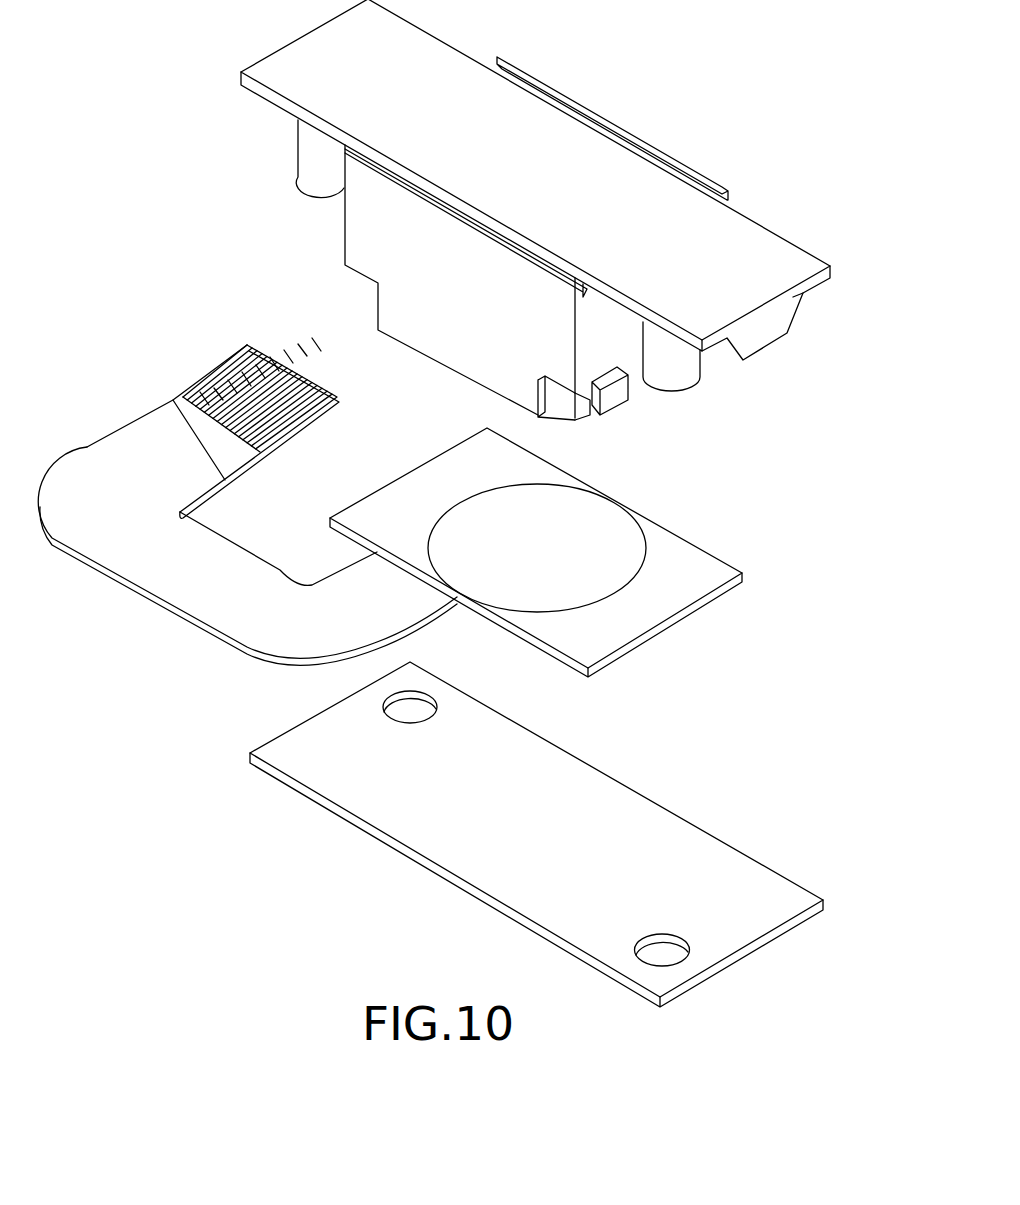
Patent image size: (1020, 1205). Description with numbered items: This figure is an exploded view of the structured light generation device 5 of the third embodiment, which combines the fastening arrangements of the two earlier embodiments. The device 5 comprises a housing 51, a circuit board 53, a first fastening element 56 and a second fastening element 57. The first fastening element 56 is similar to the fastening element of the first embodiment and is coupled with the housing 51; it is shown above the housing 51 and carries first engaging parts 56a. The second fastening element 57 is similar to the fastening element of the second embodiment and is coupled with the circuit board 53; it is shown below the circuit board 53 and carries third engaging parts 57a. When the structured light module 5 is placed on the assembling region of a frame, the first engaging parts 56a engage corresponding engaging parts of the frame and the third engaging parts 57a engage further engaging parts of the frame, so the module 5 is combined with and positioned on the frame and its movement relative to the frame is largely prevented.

The structured light generation device 5 is at (722, 81).
The housing 51 is at (377, 263).
The circuit board 53 is at (195, 593).
The first fastening element 56 is at (753, 247).
The first engaging parts 56a is at (318, 160).
The second fastening element 57 is at (578, 780).
The third engaging parts 57a is at (427, 693).